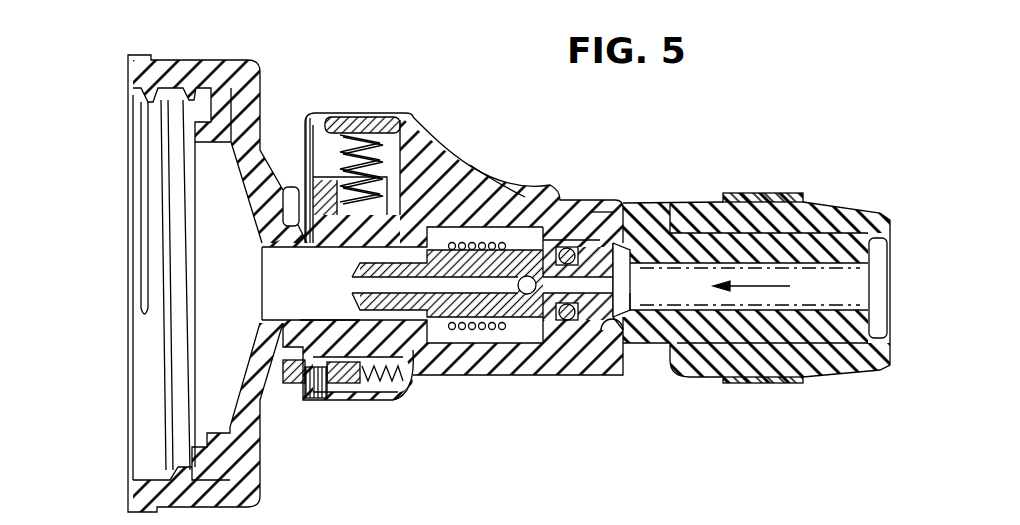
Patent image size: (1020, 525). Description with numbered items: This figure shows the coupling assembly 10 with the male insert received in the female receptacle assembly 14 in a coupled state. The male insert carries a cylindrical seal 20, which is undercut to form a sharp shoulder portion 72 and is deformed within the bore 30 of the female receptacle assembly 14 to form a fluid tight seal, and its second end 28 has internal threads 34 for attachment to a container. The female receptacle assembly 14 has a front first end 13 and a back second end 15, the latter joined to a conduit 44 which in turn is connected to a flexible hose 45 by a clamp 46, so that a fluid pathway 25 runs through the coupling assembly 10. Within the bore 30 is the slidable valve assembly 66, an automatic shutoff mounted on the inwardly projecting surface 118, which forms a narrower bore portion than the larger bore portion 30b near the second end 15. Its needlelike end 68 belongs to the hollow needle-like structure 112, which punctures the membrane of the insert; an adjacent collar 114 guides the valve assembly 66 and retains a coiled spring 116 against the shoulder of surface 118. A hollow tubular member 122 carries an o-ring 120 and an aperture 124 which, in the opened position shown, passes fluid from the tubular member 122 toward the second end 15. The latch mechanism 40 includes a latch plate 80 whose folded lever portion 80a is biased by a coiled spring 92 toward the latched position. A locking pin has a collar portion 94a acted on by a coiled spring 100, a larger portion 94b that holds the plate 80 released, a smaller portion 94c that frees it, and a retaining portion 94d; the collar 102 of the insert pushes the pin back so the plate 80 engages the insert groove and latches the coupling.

The coupling assembly 10 is at (204, 48).
The first end of female receptacle assembly 13 is at (288, 187).
The female receptacle assembly 14 is at (511, 177).
The second end of female receptacle assembly 15 is at (612, 378).
The cylindrical seal 20 is at (460, 167).
The fluid pathway 25 is at (769, 289).
The second end of male insert 28 is at (128, 448).
The bore 30 is at (500, 367).
The bore portion 30b is at (635, 335).
The internal threads 34 is at (147, 100).
The latch mechanism 40 is at (378, 142).
The conduit 44 is at (751, 275).
The flexible hose 45 is at (840, 370).
The clamp 46 is at (780, 193).
The valve assembly 66 is at (598, 220).
The needlelike end 68 is at (370, 278).
The shoulder portion 72 is at (440, 352).
The latch plate 80 is at (310, 400).
The lever portion 80a is at (313, 123).
The coiled spring 92 is at (380, 140).
The collar portion of pin 94a is at (373, 398).
The pin portion 94b is at (327, 400).
The pin portion 94c is at (293, 385).
The pin portion 94d is at (347, 398).
The coiled spring 100 is at (413, 390).
The collar 102 is at (327, 318).
The needle-like structure 112 is at (382, 250).
The collar 114 is at (462, 238).
The coiled spring 116 is at (521, 197).
The inwardly projecting surface 118 is at (560, 245).
The o-ring 120 is at (570, 340).
The tubular member 122 is at (553, 330).
The aperture 124 is at (613, 283).